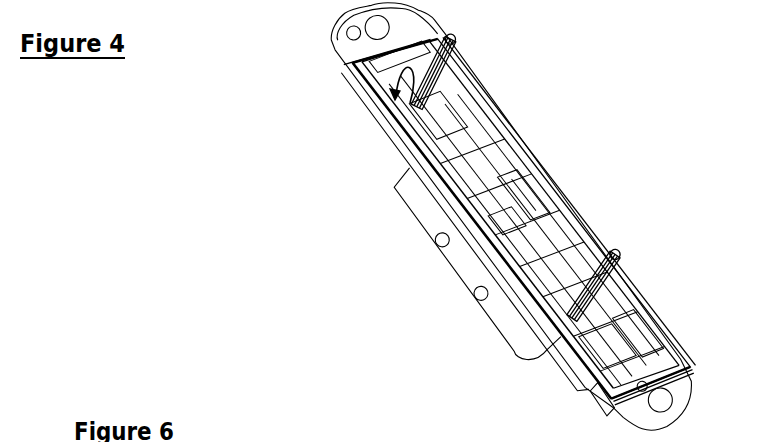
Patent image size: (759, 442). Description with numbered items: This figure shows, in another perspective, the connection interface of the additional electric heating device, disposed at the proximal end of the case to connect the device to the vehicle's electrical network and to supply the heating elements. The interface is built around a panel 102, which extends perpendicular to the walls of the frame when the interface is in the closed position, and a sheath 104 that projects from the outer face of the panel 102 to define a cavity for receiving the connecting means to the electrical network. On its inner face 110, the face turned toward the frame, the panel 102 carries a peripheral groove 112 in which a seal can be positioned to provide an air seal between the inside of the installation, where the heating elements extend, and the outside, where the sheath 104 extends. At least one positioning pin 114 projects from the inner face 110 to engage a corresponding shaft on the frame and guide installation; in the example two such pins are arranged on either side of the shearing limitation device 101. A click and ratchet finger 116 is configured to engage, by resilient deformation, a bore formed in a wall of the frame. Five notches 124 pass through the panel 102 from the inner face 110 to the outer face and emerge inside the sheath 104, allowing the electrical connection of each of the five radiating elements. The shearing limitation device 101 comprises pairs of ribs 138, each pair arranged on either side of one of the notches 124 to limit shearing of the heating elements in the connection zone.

The shearing limitation device 101 is at (512, 175).
The panel 102 is at (555, 354).
The sheath 104 is at (411, 207).
The inner face 110 is at (408, 108).
The peripheral groove 112 is at (348, 63).
The positioning pin 114 is at (442, 78).
The click and ratchet finger 116 is at (548, 243).
The notches 124 is at (506, 218).
The pair of ribs 138 is at (535, 215).